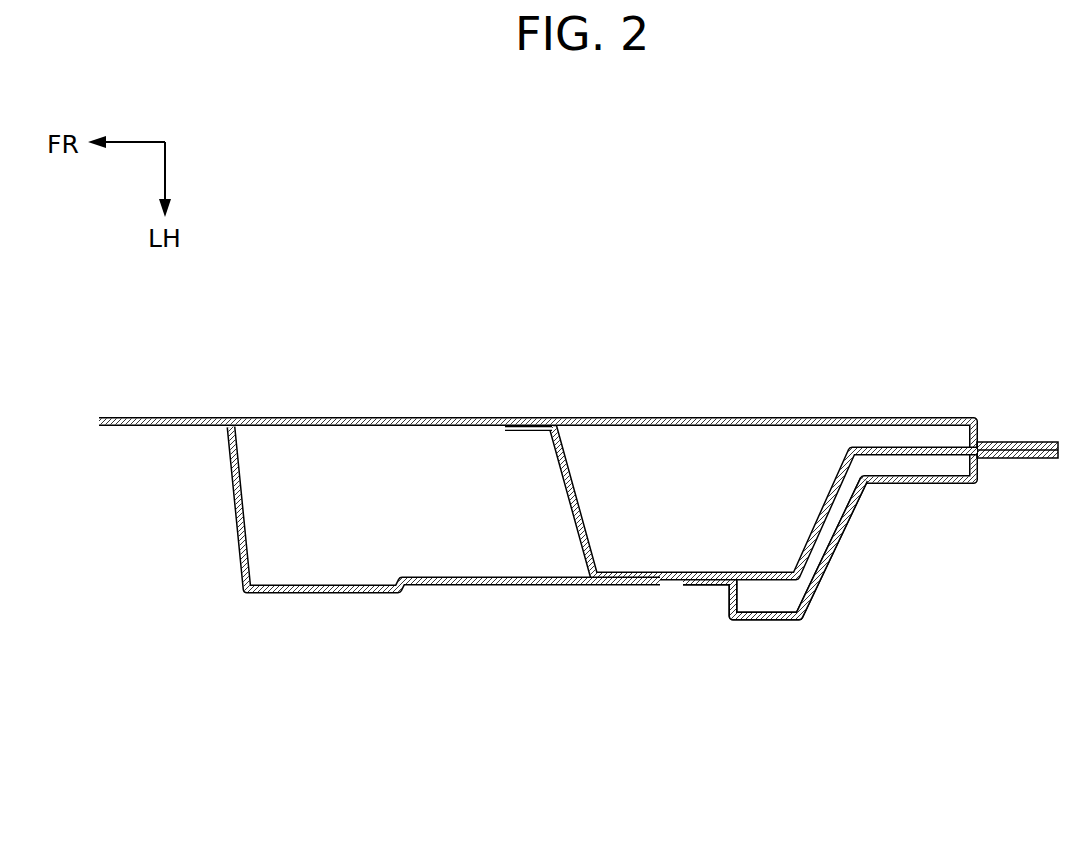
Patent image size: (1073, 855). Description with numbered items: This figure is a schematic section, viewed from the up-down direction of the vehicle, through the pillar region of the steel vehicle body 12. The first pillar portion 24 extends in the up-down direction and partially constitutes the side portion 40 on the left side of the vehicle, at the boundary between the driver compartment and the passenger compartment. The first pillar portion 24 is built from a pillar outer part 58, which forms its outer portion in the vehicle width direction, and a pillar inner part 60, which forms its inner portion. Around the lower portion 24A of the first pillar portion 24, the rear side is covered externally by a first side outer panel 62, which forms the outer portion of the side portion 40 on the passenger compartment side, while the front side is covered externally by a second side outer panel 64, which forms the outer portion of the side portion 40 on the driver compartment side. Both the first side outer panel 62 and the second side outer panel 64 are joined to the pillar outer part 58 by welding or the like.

The vehicle body 12 is at (604, 618).
The first pillar portion 24 is at (578, 469).
The lower portion 24A is at (578, 469).
The side portion 40 is at (604, 618).
The pillar outer part 58 is at (577, 490).
The pillar inner part 60 is at (728, 417).
The first side outer panel 62 is at (828, 560).
The second side outer panel 64 is at (497, 590).